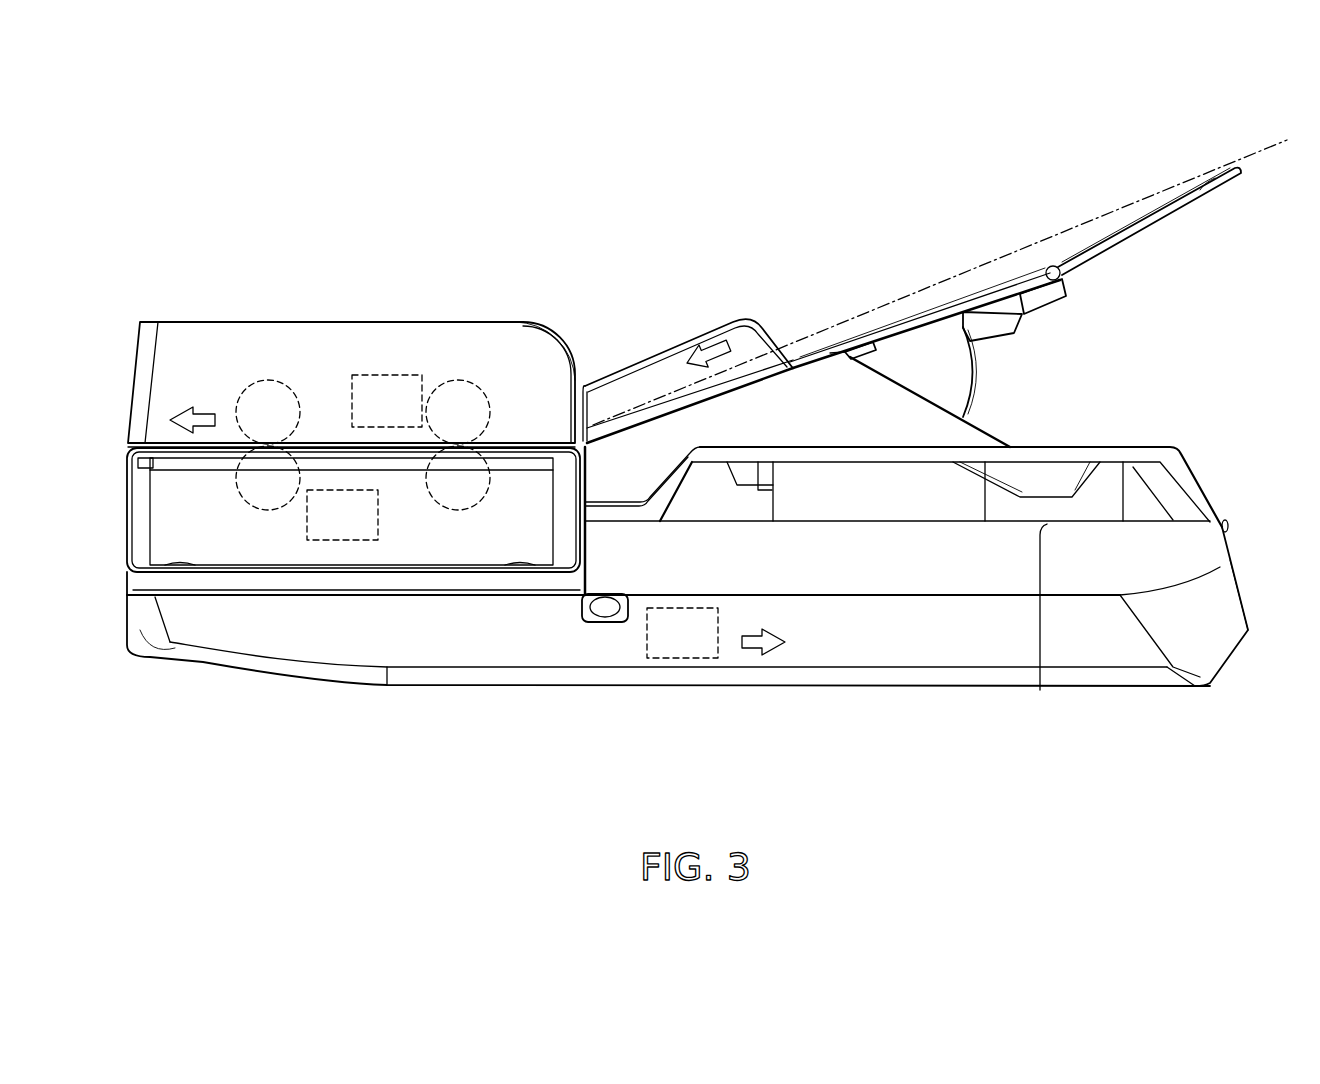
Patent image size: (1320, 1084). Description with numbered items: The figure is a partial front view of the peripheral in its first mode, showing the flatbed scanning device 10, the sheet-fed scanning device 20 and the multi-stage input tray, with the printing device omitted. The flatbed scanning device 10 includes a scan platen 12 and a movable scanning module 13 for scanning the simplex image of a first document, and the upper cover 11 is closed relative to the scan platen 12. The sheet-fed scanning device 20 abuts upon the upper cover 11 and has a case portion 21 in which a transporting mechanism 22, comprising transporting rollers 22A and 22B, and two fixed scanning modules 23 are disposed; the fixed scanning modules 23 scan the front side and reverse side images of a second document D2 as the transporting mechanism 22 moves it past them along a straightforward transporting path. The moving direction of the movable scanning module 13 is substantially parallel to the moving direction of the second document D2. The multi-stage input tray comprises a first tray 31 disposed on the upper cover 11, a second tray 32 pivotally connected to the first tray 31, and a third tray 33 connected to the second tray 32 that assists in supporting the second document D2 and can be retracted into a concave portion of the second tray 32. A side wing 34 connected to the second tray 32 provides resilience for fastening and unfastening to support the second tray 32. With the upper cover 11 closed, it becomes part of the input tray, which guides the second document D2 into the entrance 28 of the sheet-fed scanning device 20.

The flatbed scanning device 10 is at (1229, 514).
The upper cover 11 is at (1058, 448).
The scan platen 12 is at (1040, 690).
The movable scanning module 13 is at (680, 658).
The sheet-fed scanning device 20 is at (303, 315).
The case portion 21 is at (513, 323).
The transporting mechanism 22 is at (352, 133).
The transporting roller 22A is at (460, 382).
The transporting roller 22B is at (250, 382).
The fixed scanning module 23 is at (327, 490).
The entrance 28 is at (582, 378).
The first tray 31 is at (810, 382).
The second tray 32 is at (938, 322).
The third tray 33 is at (1153, 217).
The side wing 34 is at (957, 378).
The second document D2 is at (998, 257).